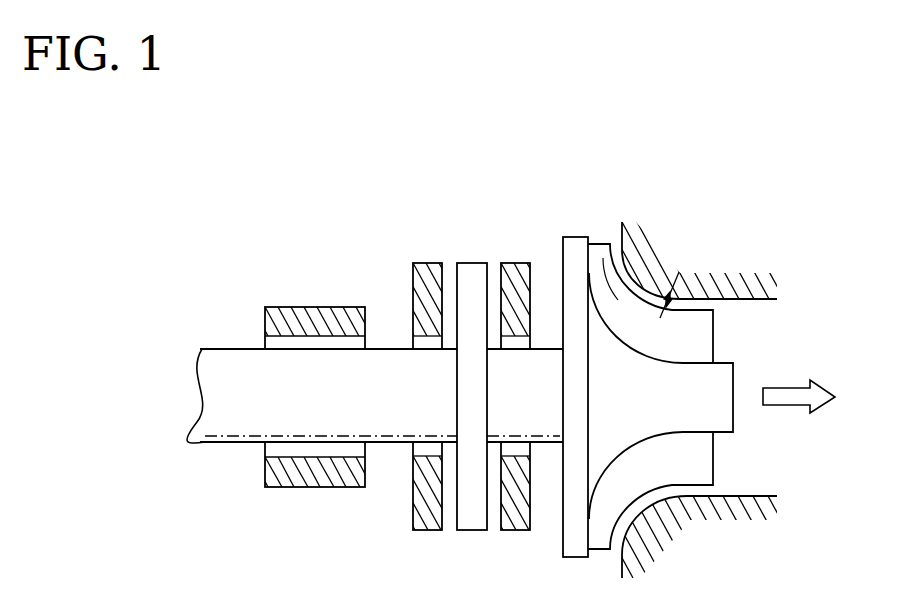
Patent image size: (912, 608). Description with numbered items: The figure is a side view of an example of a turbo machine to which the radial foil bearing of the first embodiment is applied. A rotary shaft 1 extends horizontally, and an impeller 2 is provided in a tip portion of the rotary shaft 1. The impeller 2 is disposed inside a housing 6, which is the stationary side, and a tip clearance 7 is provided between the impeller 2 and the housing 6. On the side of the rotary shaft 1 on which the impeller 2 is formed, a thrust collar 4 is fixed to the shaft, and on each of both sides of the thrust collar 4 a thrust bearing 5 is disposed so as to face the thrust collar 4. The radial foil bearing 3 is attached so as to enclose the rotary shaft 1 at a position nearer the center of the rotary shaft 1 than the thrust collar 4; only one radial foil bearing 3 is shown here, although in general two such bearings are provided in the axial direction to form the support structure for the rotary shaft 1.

The rotary shaft 1 is at (228, 357).
The impeller 2 is at (617, 300).
The radial foil bearing 3 is at (305, 361).
The thrust collar 4 is at (473, 275).
The thrust bearing 5 is at (464, 358).
The housing 6 is at (652, 267).
The tip clearance 7 is at (683, 300).